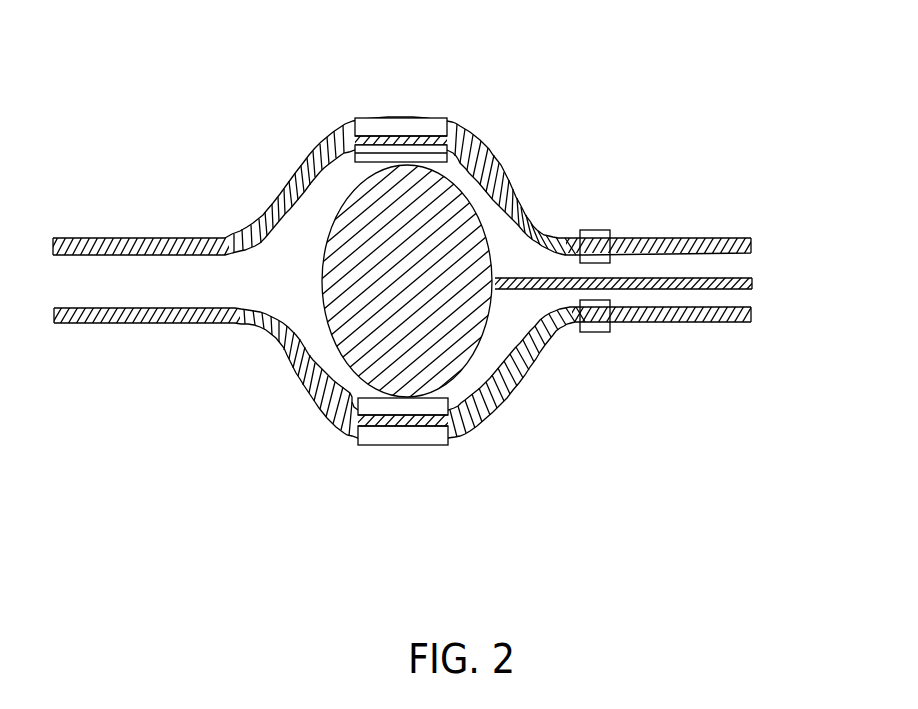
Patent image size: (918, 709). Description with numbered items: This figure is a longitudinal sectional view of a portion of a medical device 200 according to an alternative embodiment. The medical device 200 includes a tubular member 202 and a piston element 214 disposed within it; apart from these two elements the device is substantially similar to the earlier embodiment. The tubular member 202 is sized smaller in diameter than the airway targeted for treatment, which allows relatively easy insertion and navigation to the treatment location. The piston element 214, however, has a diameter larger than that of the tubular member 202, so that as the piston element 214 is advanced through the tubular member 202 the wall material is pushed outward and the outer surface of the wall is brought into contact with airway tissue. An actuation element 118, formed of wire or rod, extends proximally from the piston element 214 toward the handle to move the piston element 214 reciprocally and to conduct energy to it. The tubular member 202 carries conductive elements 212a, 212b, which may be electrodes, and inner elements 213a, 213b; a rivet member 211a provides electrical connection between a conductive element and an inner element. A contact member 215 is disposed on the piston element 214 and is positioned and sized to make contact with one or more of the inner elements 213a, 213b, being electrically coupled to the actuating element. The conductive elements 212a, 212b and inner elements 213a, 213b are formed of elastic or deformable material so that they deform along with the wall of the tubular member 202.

The medical device 200 is at (426, 281).
The tubular member 202 is at (662, 248).
The actuation element 118 is at (752, 285).
The piston element 214 is at (357, 235).
The conductive element 212b is at (433, 123).
The inner element 213b is at (447, 157).
The contact member 215 is at (365, 160).
The rivet member 211a is at (402, 421).
The conductive element 212a is at (592, 230).
The inner element 213a is at (585, 258).